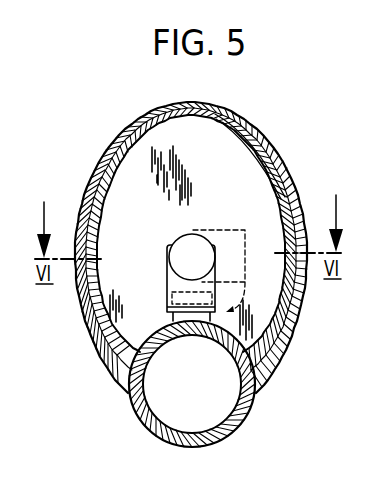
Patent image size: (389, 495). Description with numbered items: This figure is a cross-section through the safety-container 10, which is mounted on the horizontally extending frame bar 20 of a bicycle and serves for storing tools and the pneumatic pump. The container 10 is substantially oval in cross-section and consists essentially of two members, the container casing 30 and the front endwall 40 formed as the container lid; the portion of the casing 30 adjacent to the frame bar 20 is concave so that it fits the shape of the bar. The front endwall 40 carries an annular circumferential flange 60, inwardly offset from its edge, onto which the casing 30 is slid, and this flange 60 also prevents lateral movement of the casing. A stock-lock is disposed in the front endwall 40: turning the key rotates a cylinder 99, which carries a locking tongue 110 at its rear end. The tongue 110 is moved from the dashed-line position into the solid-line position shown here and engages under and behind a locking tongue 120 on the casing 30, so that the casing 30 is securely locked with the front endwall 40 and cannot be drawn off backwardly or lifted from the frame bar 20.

The safety-container 10 is at (276, 138).
The frame bar 20 is at (246, 400).
The container casing 30 is at (283, 198).
The front endwall 40 is at (218, 148).
The annular circumferential flange 60 is at (277, 170).
The cylinder 99 is at (181, 252).
The locking tongue 110 is at (167, 282).
The locking tongue 120 is at (172, 300).